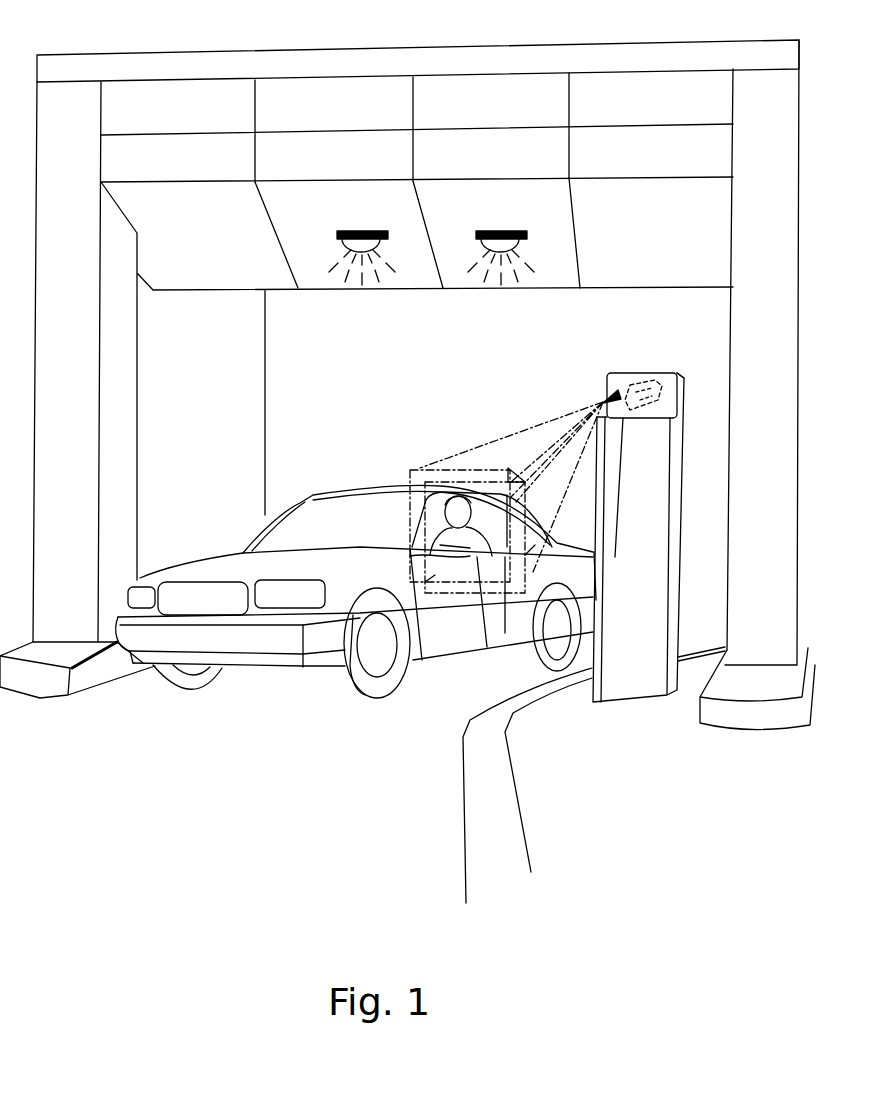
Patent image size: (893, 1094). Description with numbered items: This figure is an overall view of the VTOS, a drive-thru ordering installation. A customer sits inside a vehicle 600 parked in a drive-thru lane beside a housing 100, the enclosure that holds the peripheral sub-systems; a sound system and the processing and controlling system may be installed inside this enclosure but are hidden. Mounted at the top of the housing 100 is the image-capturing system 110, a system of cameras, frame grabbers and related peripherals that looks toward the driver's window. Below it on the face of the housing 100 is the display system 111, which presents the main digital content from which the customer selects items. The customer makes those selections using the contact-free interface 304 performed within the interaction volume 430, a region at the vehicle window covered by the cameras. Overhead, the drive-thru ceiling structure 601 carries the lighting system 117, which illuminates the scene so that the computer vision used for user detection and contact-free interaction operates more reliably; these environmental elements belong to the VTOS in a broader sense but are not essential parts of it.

The drive-thru ceiling structure 601 is at (172, 72).
The lighting system 117 is at (362, 232).
The image-capturing system 110 is at (645, 387).
The display system 111 is at (615, 557).
The housing 100 is at (638, 551).
The interaction volume 430 is at (455, 432).
The vehicle 600 is at (345, 485).
The contact-free interface 304 is at (475, 585).